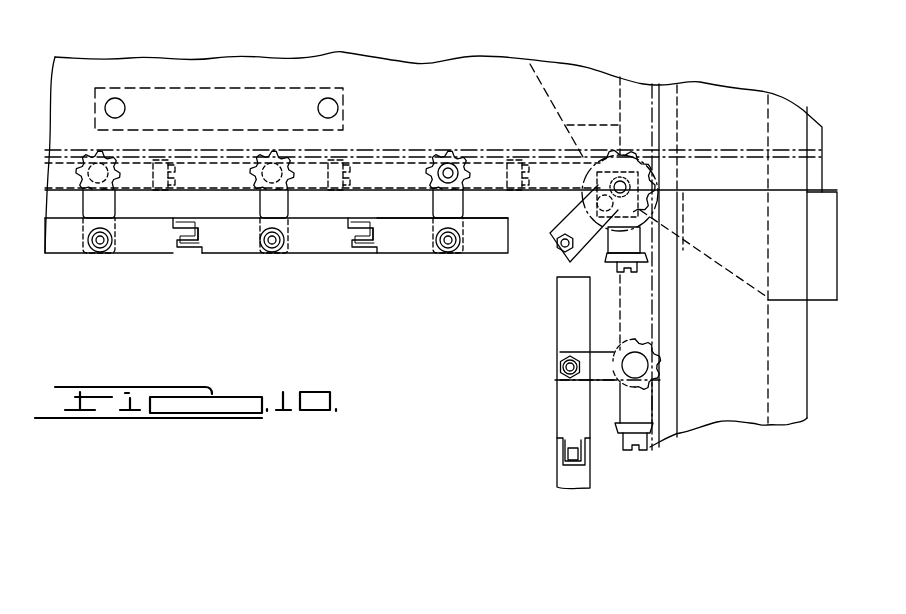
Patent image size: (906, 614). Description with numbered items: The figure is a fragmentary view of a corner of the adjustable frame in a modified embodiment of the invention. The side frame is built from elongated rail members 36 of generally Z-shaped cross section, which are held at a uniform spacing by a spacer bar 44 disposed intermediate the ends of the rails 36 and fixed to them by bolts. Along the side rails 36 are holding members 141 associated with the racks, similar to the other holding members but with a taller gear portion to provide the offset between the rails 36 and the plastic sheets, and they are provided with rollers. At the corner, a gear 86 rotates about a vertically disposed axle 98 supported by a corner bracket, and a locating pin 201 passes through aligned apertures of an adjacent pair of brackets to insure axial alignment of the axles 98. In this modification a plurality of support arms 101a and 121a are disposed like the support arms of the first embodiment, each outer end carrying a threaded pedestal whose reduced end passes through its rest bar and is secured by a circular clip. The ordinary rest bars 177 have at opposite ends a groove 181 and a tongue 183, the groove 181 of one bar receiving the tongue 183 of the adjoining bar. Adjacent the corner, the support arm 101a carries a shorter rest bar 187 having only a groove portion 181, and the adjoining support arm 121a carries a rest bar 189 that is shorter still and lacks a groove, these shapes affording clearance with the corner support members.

The rail member 36 is at (437, 85).
The spacer bar 44 is at (232, 95).
The holding member 141 is at (500, 150).
The axle 98 is at (660, 152).
The gear 86 is at (630, 205).
The locating pin 201 is at (566, 213).
The support arm 101a is at (270, 202).
The rest bar 177 is at (143, 238).
The rest bar 187 is at (420, 245).
The tongue 183 is at (350, 250).
The groove 181 is at (356, 232).
The rest bar 189 is at (563, 322).
The support arm 121a is at (603, 352).